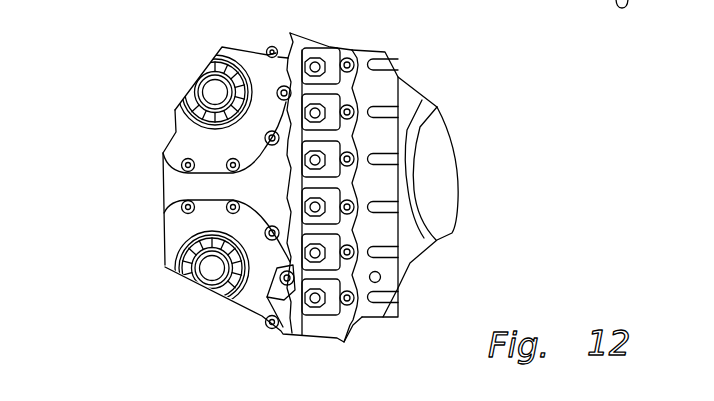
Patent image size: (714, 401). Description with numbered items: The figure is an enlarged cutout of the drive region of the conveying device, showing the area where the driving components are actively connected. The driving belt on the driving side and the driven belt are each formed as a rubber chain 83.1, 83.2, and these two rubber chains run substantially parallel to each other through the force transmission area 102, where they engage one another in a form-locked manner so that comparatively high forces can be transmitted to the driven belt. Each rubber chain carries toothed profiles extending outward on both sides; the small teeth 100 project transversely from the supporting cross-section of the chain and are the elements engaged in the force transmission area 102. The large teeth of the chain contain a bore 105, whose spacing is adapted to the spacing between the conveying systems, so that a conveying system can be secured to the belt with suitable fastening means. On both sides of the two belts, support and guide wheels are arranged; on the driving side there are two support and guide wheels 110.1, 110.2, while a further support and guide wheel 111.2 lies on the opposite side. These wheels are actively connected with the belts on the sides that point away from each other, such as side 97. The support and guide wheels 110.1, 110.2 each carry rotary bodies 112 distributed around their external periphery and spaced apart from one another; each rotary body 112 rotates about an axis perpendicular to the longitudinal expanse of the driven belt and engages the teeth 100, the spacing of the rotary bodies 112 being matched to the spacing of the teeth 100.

The side of the driving belt 97 is at (287, 48).
The force transmission area 102 is at (353, 47).
The rubber chain 83.2 is at (380, 96).
The rubber chain 83.1 is at (297, 305).
The support and guide wheel 111.2 is at (440, 150).
The support and guide wheel 110.1 is at (181, 142).
The support and guide wheel 110.2 is at (174, 243).
The teeth 100 is at (279, 164).
The bore 105 is at (381, 278).
The rotary body 112 is at (266, 328).